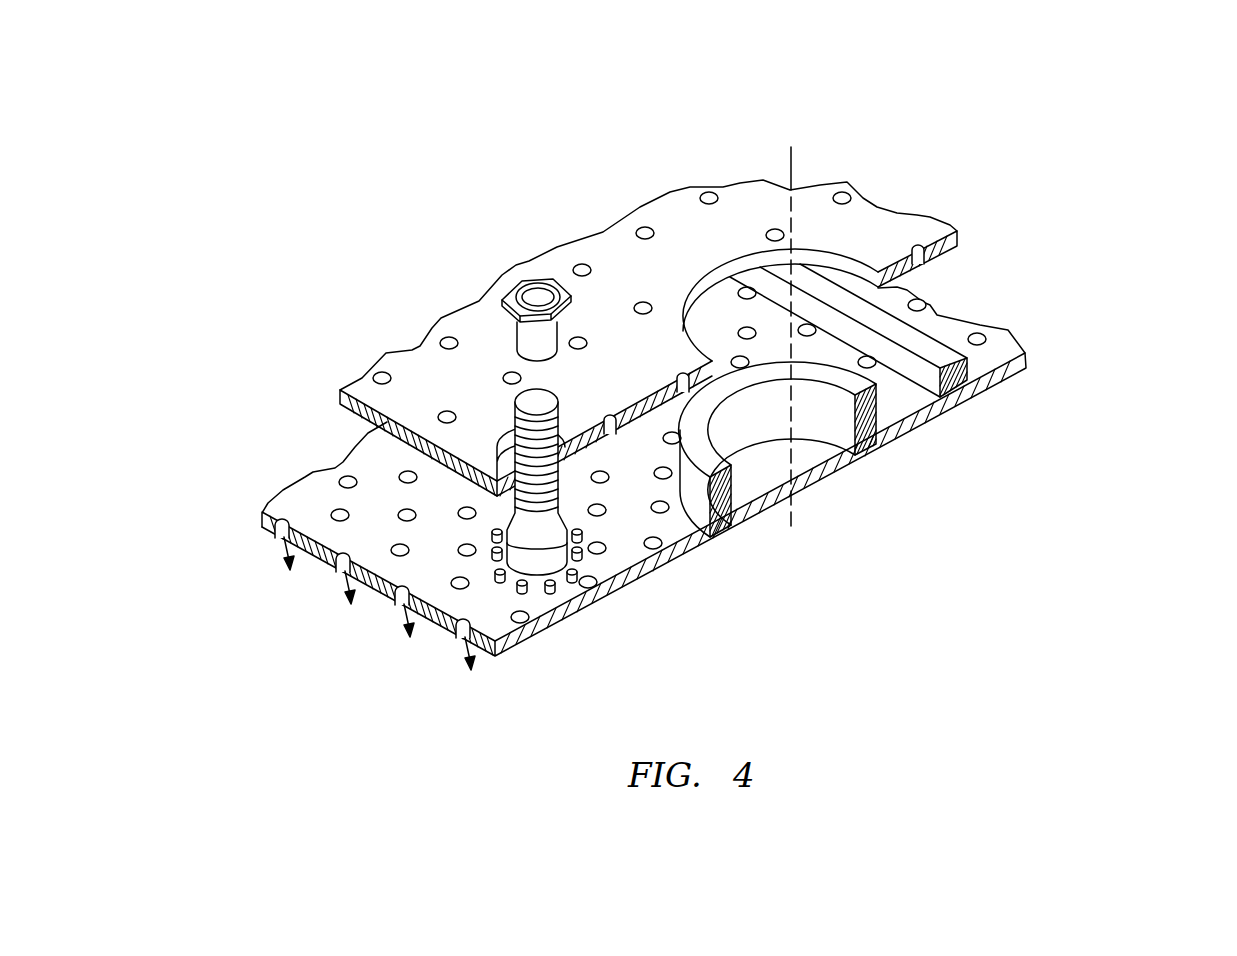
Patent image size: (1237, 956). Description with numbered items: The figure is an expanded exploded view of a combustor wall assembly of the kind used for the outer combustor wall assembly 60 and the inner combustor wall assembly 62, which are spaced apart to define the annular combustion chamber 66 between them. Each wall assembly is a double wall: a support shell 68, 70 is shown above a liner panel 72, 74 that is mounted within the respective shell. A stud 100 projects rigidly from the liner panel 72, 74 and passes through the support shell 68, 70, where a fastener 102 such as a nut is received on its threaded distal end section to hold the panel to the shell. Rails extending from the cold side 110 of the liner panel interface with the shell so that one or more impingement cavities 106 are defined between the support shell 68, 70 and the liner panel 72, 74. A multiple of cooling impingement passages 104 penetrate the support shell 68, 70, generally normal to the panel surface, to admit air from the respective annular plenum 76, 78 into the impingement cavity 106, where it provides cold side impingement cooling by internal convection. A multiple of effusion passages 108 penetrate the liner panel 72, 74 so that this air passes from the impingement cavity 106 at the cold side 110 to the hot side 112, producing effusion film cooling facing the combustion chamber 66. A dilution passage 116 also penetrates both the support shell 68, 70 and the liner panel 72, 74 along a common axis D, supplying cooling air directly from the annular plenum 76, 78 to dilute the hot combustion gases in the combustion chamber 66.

The outer combustor wall assembly 60 is at (701, 390).
The inner combustor wall assembly 62 is at (1144, 156).
The annular combustion chamber 66 is at (920, 602).
The outer support shell 68 is at (672, 297).
The inner support shell 70 is at (672, 297).
The liner panel 72 is at (671, 475).
The liner panel 74 is at (671, 475).
The outer annular plenum 76 is at (672, 297).
The inner annular plenum 78 is at (936, 177).
The stud 100 is at (528, 405).
The fastener 102 is at (548, 279).
The cooling impingement passage 104 is at (646, 226).
The impingement cavity 106 is at (1064, 339).
The effusion passage 108 is at (979, 332).
The cold side 110 is at (614, 558).
The hot side 112 is at (590, 615).
The dilution passage 116 is at (816, 469).
The common axis D is at (800, 155).